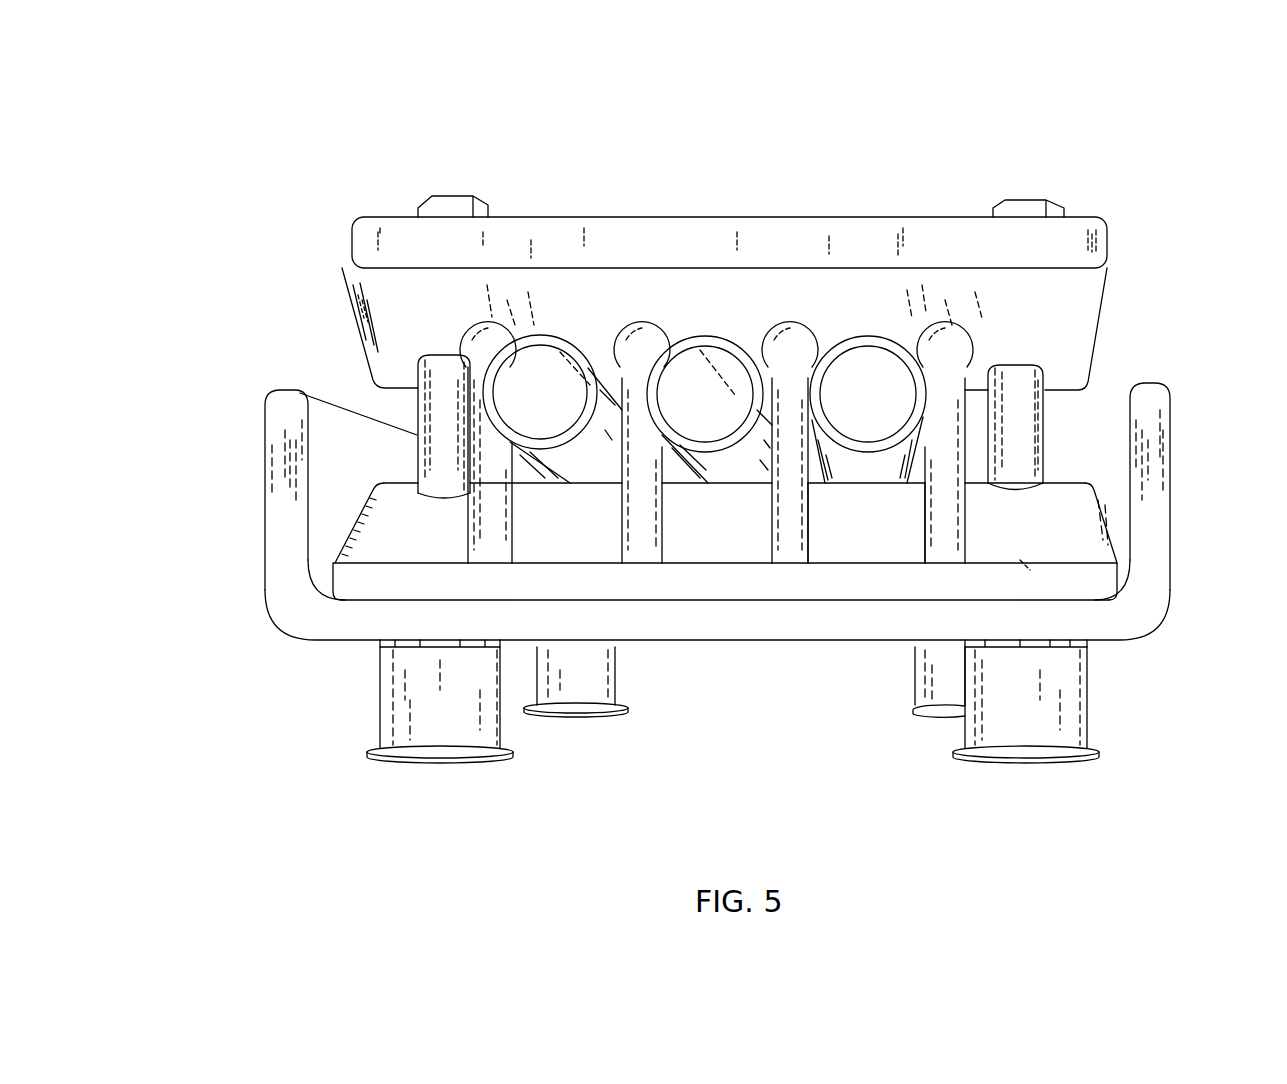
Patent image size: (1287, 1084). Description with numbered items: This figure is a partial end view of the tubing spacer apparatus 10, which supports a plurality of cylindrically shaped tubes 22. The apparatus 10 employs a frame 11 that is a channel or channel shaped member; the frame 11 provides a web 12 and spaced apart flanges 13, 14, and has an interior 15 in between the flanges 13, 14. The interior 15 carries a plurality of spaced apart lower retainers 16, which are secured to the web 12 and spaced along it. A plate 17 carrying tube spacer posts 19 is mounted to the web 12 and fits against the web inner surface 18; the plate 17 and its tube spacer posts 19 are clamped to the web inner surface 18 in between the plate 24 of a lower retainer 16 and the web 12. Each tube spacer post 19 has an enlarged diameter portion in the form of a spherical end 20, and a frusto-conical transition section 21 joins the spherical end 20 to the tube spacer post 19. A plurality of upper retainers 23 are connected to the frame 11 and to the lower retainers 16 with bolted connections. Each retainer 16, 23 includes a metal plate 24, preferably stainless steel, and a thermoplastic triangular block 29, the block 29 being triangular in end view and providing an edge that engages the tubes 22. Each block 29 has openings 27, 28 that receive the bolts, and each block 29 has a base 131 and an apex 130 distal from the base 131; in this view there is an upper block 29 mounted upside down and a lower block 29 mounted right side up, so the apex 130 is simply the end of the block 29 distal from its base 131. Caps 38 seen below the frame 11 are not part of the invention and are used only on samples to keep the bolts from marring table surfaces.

The tubing spacer apparatus 10 is at (1180, 204).
The frame 11 is at (742, 570).
The web 12 is at (797, 627).
The flange 13 is at (293, 525).
The flange 14 is at (1157, 438).
The interior 15 is at (1047, 463).
The lower retainer 16 is at (893, 542).
The plate 17 is at (725, 582).
The web inner surface 18 is at (848, 587).
The tube spacer post 19 is at (965, 550).
The spherical end 20 is at (960, 335).
The frusto-conical transition section 21 is at (965, 375).
The tube 22 is at (556, 336).
The upper retainer 23 is at (410, 318).
The plate 24 is at (817, 255).
The opening 27 is at (432, 493).
The opening 28 is at (1035, 488).
The thermoplastic triangular block 29 is at (879, 298).
The cap 38 is at (400, 722).
The apex of block 130 is at (375, 390).
The base of block 131 is at (1105, 268).